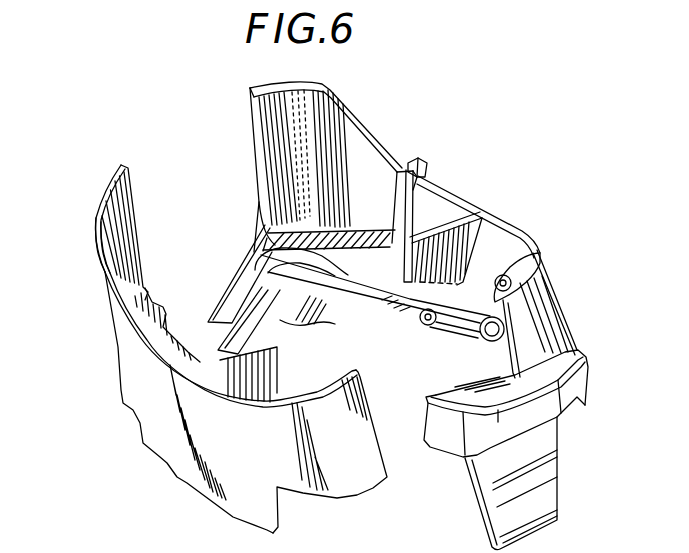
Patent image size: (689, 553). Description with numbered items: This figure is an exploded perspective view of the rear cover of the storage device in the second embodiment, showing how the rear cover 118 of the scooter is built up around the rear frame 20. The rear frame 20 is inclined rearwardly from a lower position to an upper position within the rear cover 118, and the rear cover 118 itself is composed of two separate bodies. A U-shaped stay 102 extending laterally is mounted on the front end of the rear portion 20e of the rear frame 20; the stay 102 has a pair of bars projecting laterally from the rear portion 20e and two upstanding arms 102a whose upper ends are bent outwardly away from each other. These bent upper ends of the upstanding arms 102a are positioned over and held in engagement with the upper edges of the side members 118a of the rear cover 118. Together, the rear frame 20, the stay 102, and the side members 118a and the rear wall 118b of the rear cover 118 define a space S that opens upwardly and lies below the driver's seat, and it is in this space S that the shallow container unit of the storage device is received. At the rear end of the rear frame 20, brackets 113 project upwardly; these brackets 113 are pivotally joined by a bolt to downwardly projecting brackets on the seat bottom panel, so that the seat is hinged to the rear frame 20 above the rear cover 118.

The space S is at (343, 168).
The U-shaped stay 102 is at (368, 248).
The upstanding arms 102a is at (412, 198).
The brackets 113 is at (537, 251).
The rear cover 118 is at (160, 391).
The side members 118a is at (398, 160).
The rear wall 118b is at (478, 195).
The rear frame 20 is at (252, 317).
The rear portion 20e is at (362, 277).